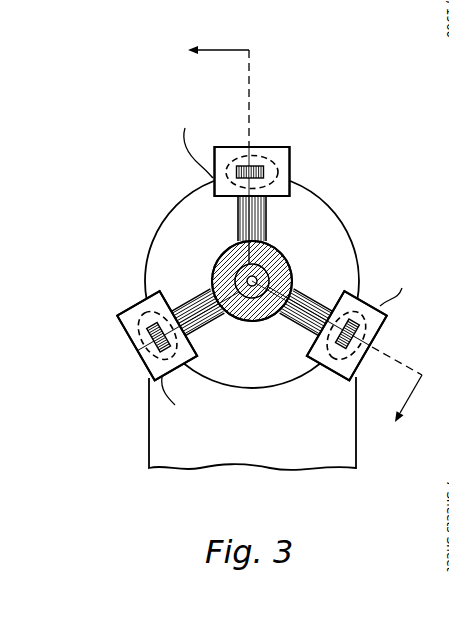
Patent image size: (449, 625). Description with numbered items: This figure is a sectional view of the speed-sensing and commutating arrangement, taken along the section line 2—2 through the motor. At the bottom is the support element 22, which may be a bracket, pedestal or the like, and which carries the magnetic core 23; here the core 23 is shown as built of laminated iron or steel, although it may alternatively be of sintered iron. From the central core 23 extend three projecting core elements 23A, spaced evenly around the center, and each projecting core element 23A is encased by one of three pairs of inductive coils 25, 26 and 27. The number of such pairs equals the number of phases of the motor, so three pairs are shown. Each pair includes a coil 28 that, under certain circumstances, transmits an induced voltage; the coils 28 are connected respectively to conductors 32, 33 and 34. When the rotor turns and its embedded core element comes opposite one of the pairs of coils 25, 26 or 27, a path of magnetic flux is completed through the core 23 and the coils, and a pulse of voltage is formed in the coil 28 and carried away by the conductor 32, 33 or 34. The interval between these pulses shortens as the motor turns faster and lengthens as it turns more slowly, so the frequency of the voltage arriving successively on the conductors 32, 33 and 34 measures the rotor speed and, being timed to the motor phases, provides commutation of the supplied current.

The line 2— 2 is at (305, 226).
The support element 22 is at (168, 440).
The magnetic core 23 is at (199, 299).
The projecting core elements 23A is at (153, 332).
The pair of inductive coils 25 is at (299, 137).
The pair of inductive coils 26 is at (393, 338).
The pair of inductive coils 27 is at (106, 308).
The coil 28 is at (231, 150).
The conductor 32 is at (192, 138).
The conductor 33 is at (395, 299).
The conductor 34 is at (172, 392).